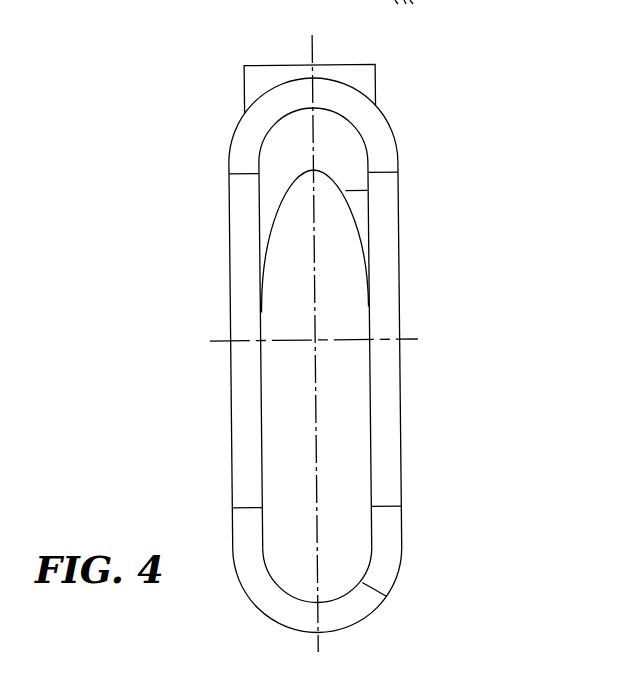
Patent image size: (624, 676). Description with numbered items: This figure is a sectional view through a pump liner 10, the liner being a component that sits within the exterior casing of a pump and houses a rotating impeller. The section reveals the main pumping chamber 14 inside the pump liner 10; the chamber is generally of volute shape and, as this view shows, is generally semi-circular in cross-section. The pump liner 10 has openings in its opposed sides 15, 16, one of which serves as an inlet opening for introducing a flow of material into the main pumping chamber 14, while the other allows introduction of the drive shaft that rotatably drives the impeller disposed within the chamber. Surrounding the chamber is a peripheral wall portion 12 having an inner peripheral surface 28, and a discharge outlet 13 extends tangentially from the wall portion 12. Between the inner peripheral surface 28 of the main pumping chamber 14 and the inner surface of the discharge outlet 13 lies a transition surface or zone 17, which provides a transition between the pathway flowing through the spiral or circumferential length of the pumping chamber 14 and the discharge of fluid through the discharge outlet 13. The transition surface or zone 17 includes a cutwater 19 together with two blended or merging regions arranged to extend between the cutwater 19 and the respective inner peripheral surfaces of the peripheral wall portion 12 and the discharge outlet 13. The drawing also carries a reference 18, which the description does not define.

The pump liner 10 is at (443, 248).
The peripheral wall portion 12 is at (333, 82).
The discharge outlet 13 is at (370, 84).
The main pumping chamber 14 is at (347, 385).
The opposed side 15 is at (242, 300).
The opposed side 16 is at (392, 308).
The transition surface or zone 17 is at (260, 232).
The central opening 18 is at (333, 230).
The cutwater 19 is at (313, 167).
The inner peripheral surface 28 is at (268, 121).